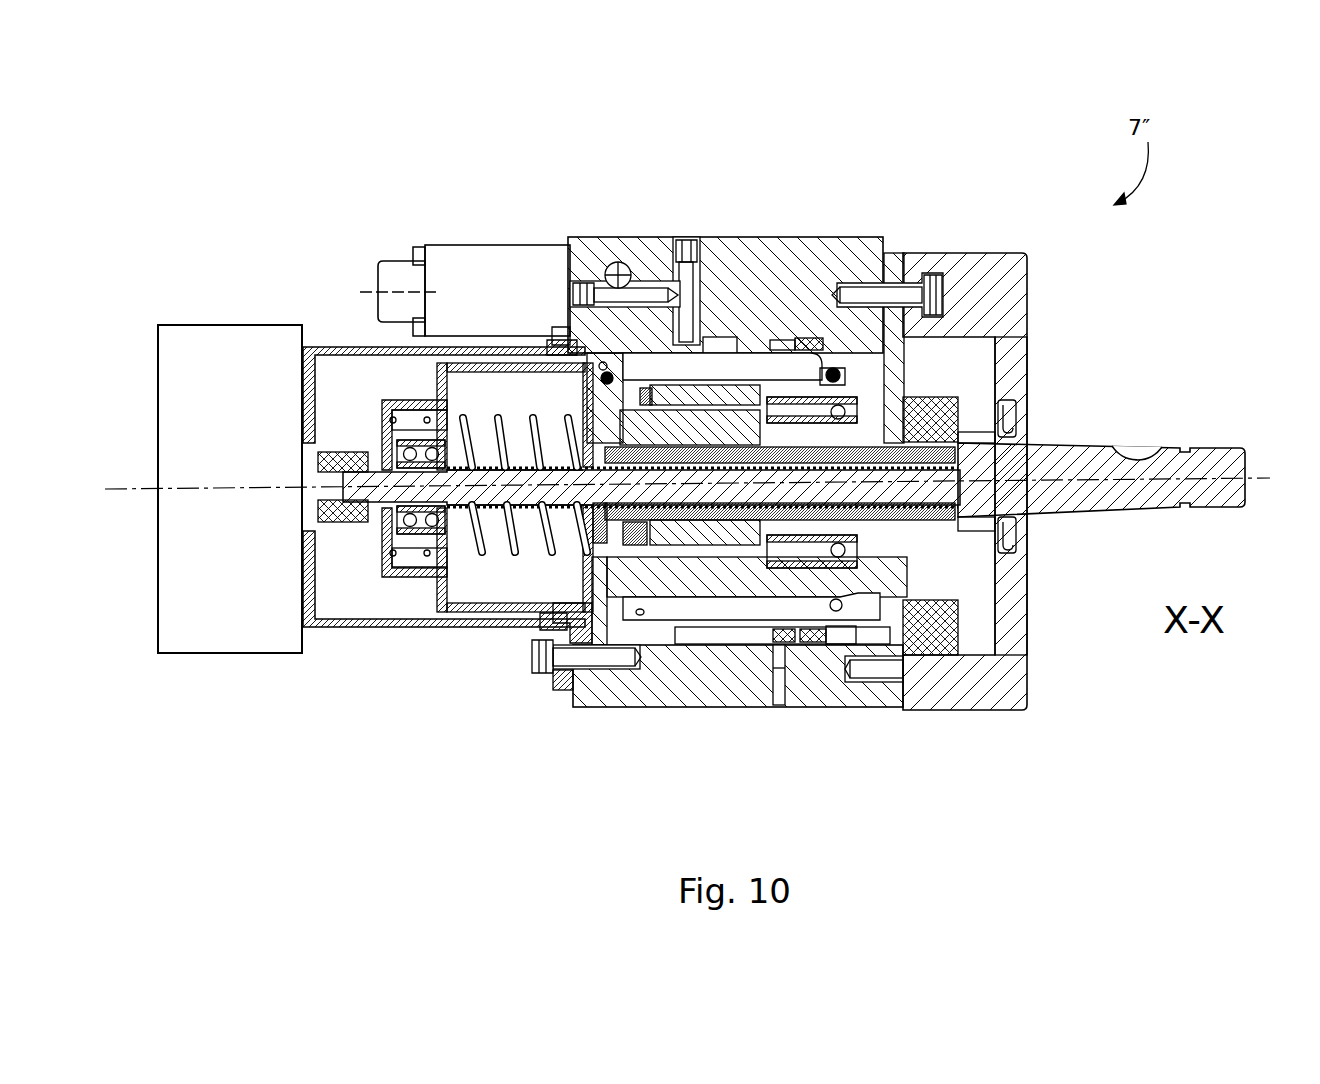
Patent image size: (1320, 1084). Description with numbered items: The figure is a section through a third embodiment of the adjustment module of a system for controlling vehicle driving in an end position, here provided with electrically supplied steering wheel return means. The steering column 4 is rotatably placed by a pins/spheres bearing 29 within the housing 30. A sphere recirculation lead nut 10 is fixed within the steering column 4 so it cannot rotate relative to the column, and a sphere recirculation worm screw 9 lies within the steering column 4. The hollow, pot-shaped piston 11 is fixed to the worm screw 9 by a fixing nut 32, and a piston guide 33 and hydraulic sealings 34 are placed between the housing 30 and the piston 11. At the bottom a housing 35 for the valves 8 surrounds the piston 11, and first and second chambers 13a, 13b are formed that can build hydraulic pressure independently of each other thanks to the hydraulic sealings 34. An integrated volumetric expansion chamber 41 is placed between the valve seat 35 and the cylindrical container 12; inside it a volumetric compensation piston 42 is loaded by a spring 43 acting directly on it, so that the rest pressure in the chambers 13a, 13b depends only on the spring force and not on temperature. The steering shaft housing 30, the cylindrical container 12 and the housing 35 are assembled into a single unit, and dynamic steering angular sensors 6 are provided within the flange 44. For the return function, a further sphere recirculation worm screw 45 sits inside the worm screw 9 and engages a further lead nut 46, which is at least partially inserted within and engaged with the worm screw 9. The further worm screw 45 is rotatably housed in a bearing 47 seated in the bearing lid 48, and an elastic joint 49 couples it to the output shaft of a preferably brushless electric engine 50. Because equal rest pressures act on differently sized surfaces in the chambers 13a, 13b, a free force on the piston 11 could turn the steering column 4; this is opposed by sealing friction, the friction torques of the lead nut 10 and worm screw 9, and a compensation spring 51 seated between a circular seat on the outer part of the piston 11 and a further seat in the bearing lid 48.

The steering column 4 is at (1083, 460).
The dynamic steering angular sensor 6 is at (940, 640).
The valves 8 is at (472, 287).
The worm screw 9 is at (838, 412).
The lead nut 10 is at (701, 372).
The piston 11 is at (565, 345).
The cylindrical container 12 is at (843, 630).
The first chamber 13a is at (858, 608).
The second chamber 13b is at (692, 435).
The bearing 29 is at (815, 347).
The housing 30 is at (883, 592).
The fixing nut 32 is at (416, 258).
The piston guide 33 is at (590, 707).
The hydraulic sealings 34 is at (607, 378).
The housing for valves 35 is at (630, 688).
The integrated volumetric expansion chamber 41 is at (728, 638).
The volumetric compensation piston 42 is at (782, 637).
The spring 43 is at (812, 635).
The flange 44 is at (1015, 640).
The further worm screw 45 is at (884, 345).
The further lead nut 46 is at (920, 453).
The bearing 47 is at (393, 403).
The bearing lid 48 is at (562, 610).
The elastic joint 49 is at (338, 514).
The electric engine 50 is at (197, 362).
The compensation spring 51 is at (512, 550).